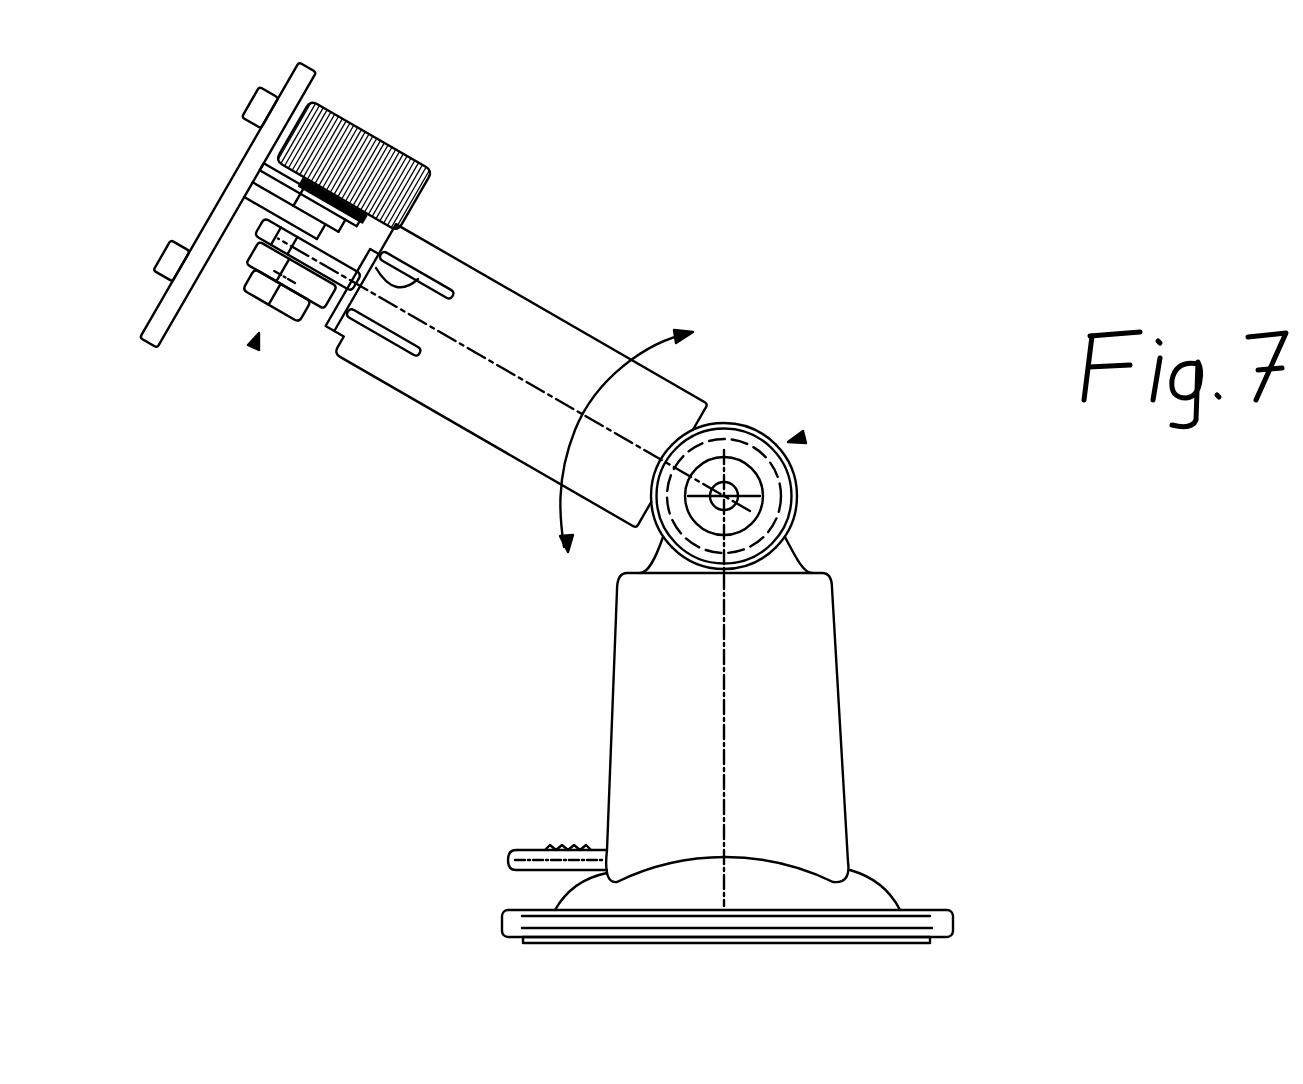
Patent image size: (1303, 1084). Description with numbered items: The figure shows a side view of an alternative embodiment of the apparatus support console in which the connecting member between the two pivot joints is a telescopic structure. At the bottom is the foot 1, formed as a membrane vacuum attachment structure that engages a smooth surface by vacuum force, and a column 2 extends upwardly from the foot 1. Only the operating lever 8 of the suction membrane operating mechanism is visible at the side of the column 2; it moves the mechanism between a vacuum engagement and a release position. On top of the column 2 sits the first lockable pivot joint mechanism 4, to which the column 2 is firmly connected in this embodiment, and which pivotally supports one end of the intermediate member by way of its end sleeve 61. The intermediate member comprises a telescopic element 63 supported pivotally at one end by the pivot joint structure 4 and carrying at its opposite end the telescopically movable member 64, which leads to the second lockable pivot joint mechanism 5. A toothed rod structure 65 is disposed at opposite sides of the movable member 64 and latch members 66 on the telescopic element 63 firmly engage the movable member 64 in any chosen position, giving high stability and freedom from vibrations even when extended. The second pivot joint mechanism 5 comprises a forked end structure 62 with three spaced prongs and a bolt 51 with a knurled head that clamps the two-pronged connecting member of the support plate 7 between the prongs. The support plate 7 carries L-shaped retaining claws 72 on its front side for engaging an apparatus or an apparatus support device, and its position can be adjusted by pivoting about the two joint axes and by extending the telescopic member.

The foot 1 is at (853, 897).
The column 2 is at (817, 698).
The first lockable pivot joint mechanism 4 is at (766, 462).
The second lockable pivot joint mechanism 5 is at (294, 301).
The support plate 7 is at (237, 178).
The operating lever 8 is at (537, 866).
The bolt 51 is at (411, 168).
The end sleeve 61 is at (706, 424).
The forked end structure 62 is at (312, 292).
The telescopic element 63 is at (571, 345).
The telescopically movable member 64 is at (333, 325).
The toothed rod structure 65 is at (382, 278).
The latch members 66 is at (426, 305).
The L-shaped retaining claws 72 is at (250, 103).